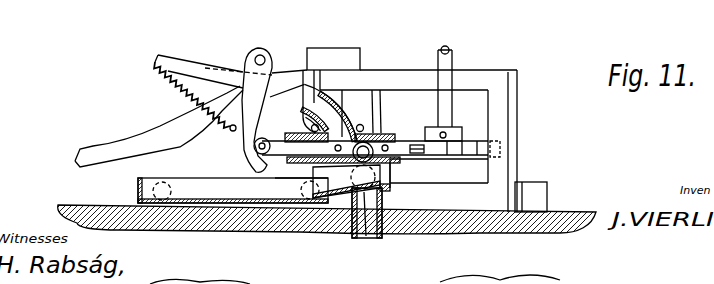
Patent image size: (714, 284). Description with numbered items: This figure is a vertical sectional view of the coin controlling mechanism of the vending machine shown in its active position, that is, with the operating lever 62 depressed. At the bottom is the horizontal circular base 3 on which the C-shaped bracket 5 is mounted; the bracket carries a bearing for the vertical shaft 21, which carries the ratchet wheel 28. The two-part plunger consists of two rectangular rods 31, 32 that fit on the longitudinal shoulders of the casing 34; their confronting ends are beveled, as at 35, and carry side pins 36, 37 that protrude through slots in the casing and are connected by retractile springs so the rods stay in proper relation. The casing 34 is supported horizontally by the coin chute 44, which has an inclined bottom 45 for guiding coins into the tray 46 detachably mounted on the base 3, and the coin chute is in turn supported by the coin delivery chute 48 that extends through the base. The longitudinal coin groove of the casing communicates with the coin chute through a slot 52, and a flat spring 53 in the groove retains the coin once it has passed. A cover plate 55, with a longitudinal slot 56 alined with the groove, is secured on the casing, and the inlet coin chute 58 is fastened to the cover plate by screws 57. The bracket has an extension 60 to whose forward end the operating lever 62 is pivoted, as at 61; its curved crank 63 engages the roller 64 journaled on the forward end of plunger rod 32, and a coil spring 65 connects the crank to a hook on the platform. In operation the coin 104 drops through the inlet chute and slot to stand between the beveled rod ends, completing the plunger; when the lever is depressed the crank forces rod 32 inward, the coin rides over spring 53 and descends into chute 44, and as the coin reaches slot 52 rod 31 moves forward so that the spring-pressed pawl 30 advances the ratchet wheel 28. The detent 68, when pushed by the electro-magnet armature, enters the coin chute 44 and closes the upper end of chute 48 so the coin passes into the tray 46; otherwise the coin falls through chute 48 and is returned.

The circular base 3 is at (575, 212).
The C-shaped bracket 5 is at (512, 102).
The vertical shaft 21 is at (449, 47).
The ratchet wheel 28 is at (474, 141).
The spring-pressed pawl 30 is at (437, 153).
The plunger rod 31 is at (405, 137).
The plunger rod 32 is at (298, 145).
The casing 34 is at (290, 180).
The beveled ends 35 is at (378, 133).
The side pin 36 is at (400, 133).
The side pin 37 is at (343, 135).
The coin chute 44 is at (392, 178).
The inclined bottom 45 is at (332, 212).
The tray 46 is at (233, 190).
The coin delivery chute 48 is at (372, 238).
The slot 52 is at (398, 188).
The flat spring 53 is at (345, 164).
The cover plate 55 is at (293, 133).
The longitudinal slot 56 is at (363, 142).
The screws 57 is at (308, 68).
The inlet coin chute 58 is at (190, 55).
The extension 60 is at (333, 59).
The pivot 61 is at (263, 55).
The operating lever 62 is at (159, 126).
The curved crank 63 is at (257, 110).
The roller 64 is at (262, 138).
The coil spring 65 is at (189, 96).
The detent 68 is at (368, 230).
The coin 104 is at (389, 133).